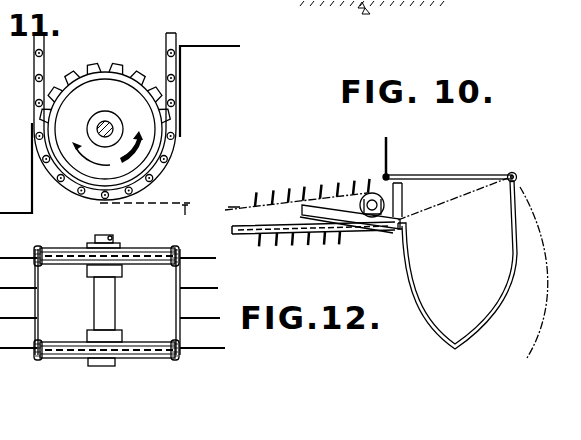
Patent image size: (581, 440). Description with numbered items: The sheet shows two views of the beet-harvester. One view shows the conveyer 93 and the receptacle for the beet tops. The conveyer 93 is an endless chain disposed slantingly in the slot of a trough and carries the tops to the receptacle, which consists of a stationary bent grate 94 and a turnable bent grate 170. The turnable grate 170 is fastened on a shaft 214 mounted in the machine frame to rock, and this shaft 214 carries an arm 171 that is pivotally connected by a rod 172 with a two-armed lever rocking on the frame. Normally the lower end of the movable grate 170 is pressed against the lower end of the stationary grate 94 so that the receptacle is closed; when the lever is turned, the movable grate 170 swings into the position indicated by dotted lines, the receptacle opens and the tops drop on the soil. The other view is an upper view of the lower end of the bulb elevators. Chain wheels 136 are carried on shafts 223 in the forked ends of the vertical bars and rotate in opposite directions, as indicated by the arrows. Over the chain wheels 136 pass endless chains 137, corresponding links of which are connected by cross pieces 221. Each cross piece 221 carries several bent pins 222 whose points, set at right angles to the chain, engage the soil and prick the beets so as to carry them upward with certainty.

In FIG. 10, the conveyer 93 is at (305, 189).
In FIG. 10, the stationary bent grate 94 is at (407, 288).
In FIG. 12, the chain wheels 136 is at (103, 72).
In FIG. 10, the chain wheels 136 is at (375, 14).
In FIG. 12, the endless chains 137 is at (177, 39).
In FIG. 10, the turnable bent grate 170 is at (519, 210).
In FIG. 10, the arm 171 is at (444, 204).
In FIG. 10, the rod 172 is at (388, 150).
In FIG. 10, the shaft 214 is at (513, 173).
In FIG. 12, the cross pieces 221 is at (33, 126).
In FIG. 12, the bent pins 222 is at (200, 48).
In FIG. 12, the shafts 223 is at (108, 296).